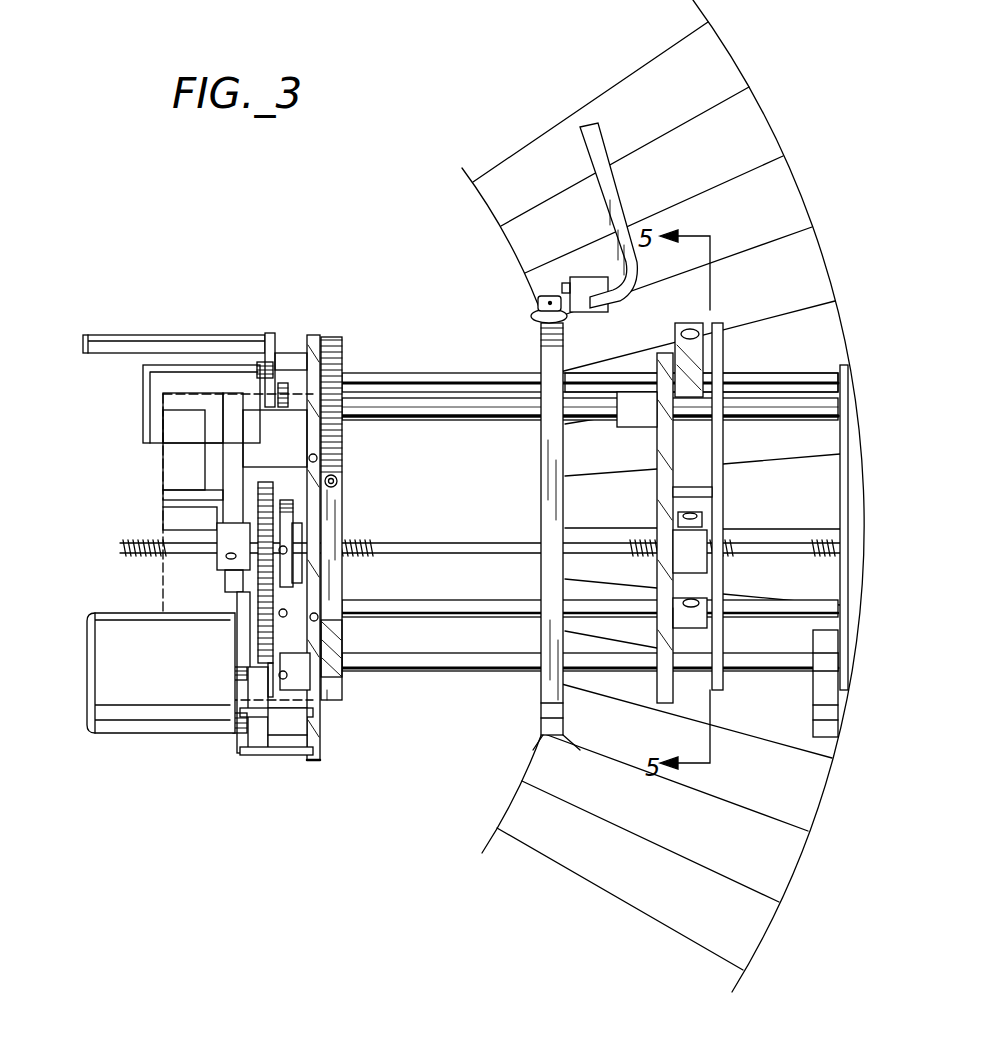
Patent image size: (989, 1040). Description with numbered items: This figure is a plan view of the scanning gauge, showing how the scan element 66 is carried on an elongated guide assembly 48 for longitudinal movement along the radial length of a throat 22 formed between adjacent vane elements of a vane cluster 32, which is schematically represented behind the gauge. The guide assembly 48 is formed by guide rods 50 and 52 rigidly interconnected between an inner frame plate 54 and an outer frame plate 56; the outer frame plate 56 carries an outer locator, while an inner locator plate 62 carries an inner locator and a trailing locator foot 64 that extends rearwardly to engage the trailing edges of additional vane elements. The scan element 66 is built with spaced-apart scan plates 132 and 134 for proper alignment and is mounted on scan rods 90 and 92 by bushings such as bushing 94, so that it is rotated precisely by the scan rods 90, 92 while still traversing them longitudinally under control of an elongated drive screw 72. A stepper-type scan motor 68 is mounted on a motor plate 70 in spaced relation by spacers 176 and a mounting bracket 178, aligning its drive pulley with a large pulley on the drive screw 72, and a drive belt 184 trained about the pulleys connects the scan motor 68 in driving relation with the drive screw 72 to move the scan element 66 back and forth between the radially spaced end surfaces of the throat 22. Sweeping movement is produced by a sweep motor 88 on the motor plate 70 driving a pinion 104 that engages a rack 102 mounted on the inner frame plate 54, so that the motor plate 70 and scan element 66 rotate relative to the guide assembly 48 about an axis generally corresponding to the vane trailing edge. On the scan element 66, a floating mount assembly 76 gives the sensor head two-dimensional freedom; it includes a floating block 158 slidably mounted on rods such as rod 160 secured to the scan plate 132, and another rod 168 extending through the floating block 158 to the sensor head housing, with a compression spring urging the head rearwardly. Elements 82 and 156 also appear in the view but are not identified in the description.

The throat 22 is at (428, 296).
The vane cluster 32 is at (491, 172).
The elongated guide assembly 48 is at (781, 370).
The guide rod 50 is at (399, 666).
The guide rod 52 is at (392, 376).
The inner frame plate 54 is at (342, 520).
The outer frame plate 56 is at (841, 463).
The inner locator plate 62 is at (542, 462).
The trailing locator foot 64 is at (612, 213).
The scan element 66 is at (735, 480).
The scan motor 68 is at (140, 672).
The motor plate 70 is at (312, 338).
The drive screw 72 is at (409, 543).
The floating mount assembly 76 is at (690, 478).
The block 82 is at (675, 430).
The sweep motor 88 is at (203, 392).
The scan rod 90 is at (405, 612).
The scan rod 92 is at (493, 413).
The bushing 94 is at (703, 620).
The rack 102 is at (337, 452).
The pinion 104 is at (337, 425).
The scan plate 132 is at (661, 500).
The scan plate 134 is at (718, 512).
The bolt block 156 is at (673, 347).
The floating block 158 is at (709, 574).
The rod 160 is at (700, 522).
The rod 168 is at (673, 608).
The spacers 176 is at (300, 725).
The mounting bracket 178 is at (245, 745).
The drive belt 184 is at (260, 636).